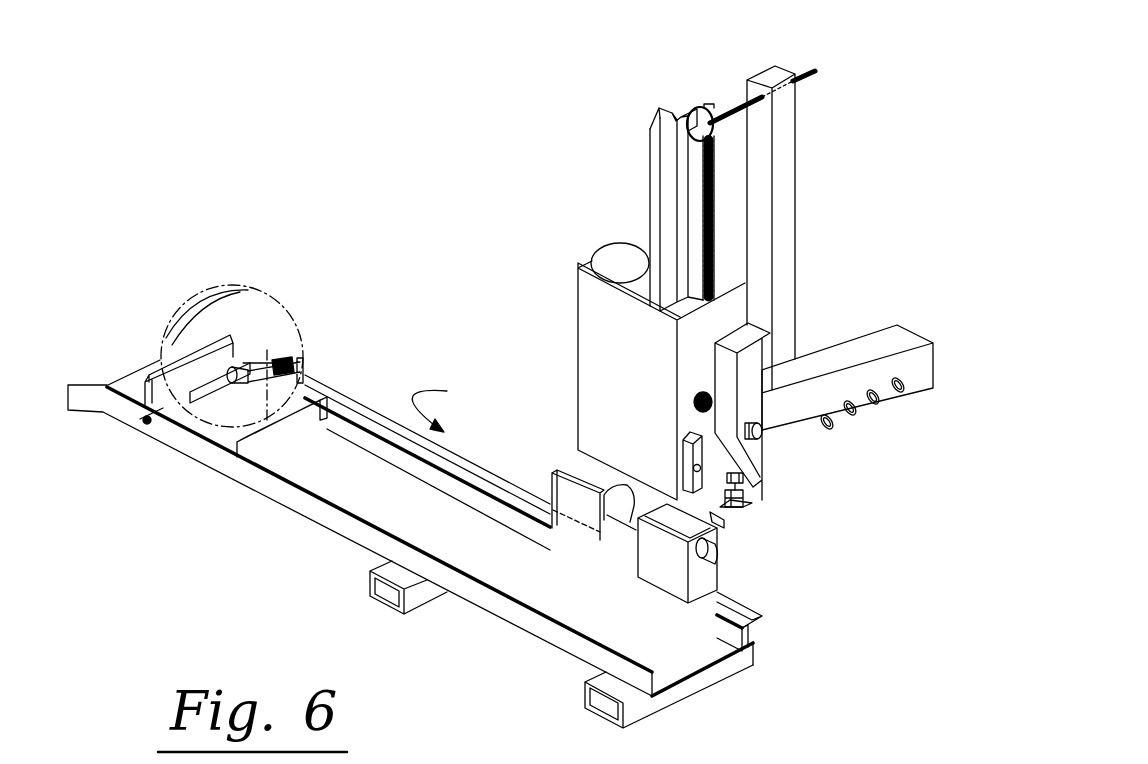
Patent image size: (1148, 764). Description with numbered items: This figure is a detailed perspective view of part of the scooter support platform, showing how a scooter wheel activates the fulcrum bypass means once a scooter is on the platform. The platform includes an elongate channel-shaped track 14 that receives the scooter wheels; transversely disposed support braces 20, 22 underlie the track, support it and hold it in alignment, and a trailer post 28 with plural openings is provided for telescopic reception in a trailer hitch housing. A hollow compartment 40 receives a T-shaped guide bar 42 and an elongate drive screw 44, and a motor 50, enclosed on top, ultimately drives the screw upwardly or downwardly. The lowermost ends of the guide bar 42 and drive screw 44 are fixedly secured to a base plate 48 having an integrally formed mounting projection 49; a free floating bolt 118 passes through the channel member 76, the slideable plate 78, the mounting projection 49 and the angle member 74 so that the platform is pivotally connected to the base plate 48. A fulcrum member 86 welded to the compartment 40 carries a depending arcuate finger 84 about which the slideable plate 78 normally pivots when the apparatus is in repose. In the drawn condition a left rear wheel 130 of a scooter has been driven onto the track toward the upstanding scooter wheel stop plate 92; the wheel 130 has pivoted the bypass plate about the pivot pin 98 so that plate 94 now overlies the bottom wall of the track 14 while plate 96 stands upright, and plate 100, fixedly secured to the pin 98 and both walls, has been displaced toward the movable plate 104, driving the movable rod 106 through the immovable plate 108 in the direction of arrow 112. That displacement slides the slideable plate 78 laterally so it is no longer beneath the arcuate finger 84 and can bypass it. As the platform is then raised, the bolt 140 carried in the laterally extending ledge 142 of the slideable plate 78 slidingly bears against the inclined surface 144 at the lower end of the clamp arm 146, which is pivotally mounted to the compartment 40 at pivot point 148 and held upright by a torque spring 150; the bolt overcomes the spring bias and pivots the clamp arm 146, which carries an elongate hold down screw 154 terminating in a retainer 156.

The channel-shaped track 14 is at (500, 560).
The transverse support brace 20 is at (586, 691).
The transverse support brace 22 is at (369, 580).
The trailer post 28 is at (867, 348).
The compartment 40 is at (643, 356).
The T-shaped guide bar 42 is at (648, 150).
The drive screw 44 is at (715, 193).
The base plate 48 is at (737, 525).
The mounting projection 49 is at (623, 512).
The motor 50 is at (612, 253).
The angle member 74 is at (557, 477).
The channel member 76 is at (723, 592).
The slideable plate 78 is at (720, 521).
The arcuate finger 84 is at (672, 497).
The fulcrum member 86 is at (687, 437).
The scooter wheel stop plate 92 is at (270, 447).
The bypass plate wall 94 is at (203, 428).
The bypass plate wall 96 is at (150, 373).
The pivot pin 98 is at (160, 437).
The plate 100 is at (249, 312).
The movable plate 104 is at (284, 347).
The movable rod 106 is at (460, 452).
The immovable plate 108 is at (303, 375).
The directional arrow 112 is at (458, 400).
The free floating bolt 118 is at (718, 555).
The left rear wheel 130 is at (247, 283).
The bolt 140 is at (745, 485).
The laterally extending ledge 142 is at (745, 502).
The inclined surface 144 is at (733, 453).
The clamp arm 146 is at (790, 228).
The pivot point 148 is at (765, 432).
The torque spring 150 is at (697, 402).
The hold down screw 154 is at (815, 72).
The retainer 156 is at (690, 112).